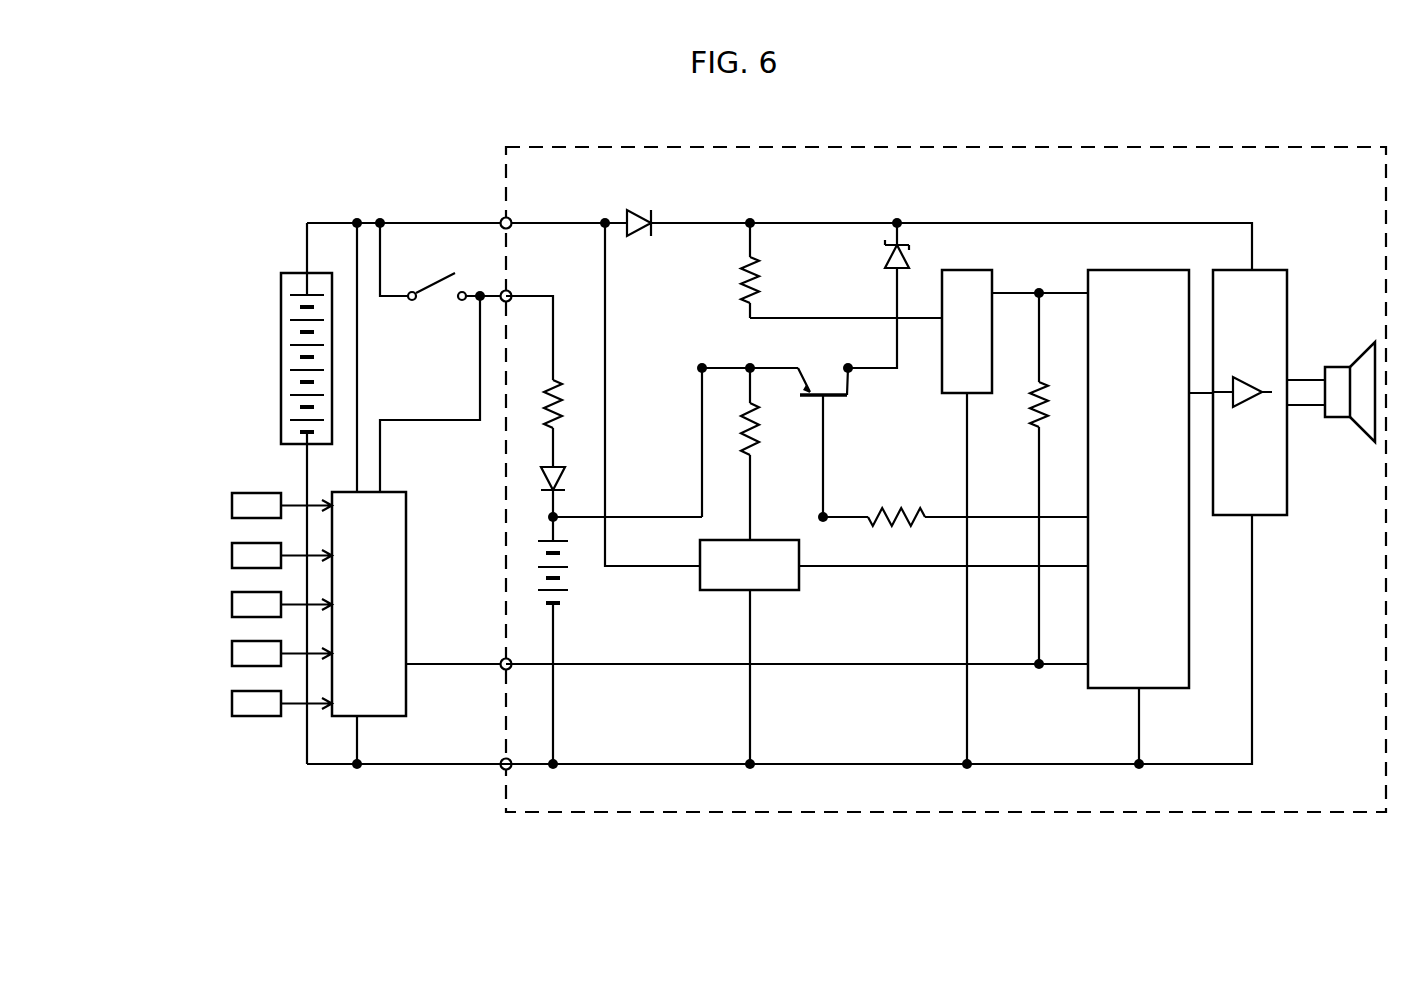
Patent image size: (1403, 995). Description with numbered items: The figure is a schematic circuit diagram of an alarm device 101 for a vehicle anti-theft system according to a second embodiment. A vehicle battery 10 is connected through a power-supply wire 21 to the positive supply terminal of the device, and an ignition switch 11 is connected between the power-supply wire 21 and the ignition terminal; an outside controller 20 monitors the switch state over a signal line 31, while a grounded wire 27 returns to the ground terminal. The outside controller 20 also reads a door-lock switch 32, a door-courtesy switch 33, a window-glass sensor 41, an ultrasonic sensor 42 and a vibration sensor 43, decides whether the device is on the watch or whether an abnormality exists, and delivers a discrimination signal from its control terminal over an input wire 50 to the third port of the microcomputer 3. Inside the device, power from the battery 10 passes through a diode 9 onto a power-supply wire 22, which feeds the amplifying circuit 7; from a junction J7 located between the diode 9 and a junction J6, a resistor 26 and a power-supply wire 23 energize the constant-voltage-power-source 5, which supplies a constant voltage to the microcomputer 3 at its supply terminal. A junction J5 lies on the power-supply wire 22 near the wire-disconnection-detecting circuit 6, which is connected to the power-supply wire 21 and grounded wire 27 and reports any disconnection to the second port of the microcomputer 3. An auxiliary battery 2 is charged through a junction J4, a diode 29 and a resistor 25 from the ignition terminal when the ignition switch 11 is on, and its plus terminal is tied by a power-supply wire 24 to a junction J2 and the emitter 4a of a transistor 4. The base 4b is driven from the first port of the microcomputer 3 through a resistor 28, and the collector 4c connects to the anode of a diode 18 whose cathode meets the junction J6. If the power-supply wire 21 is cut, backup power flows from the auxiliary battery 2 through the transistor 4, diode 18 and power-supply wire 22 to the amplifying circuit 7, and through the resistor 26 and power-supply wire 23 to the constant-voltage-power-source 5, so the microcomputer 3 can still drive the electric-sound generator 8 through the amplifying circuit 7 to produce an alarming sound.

The alarm device 101 is at (550, 147).
The vehicle battery 10 is at (292, 272).
The power-supply wire 21 is at (430, 222).
The ignition switch 11 is at (433, 284).
The signal line 31 is at (410, 420).
The outside controller 20 is at (505, 659).
The grounded wire 27 is at (395, 766).
The door-lock switch 32 is at (230, 507).
The door-courtesy switch 33 is at (230, 556).
The window-glass sensor 41 is at (230, 605).
The ultrasonic sensor 42 is at (230, 654).
The vibration sensor 43 is at (230, 704).
The resistor 25 is at (548, 393).
The diode 29 is at (550, 470).
The auxiliary battery 2 is at (565, 643).
The power-supply wire 24 is at (643, 516).
The diode 9 is at (634, 209).
The wire-disconnection-detecting circuit 6 is at (699, 555).
The power-supply wire 22 is at (800, 222).
The resistor 26 is at (745, 280).
The power-supply wire 23 is at (800, 317).
The diode 18 is at (886, 257).
The transistor 4 is at (806, 398).
The emitter 4a is at (752, 366).
The base 4b is at (820, 514).
The collector 4c is at (857, 357).
The resistor 28 is at (911, 515).
The constant-voltage-power-source 5 is at (945, 270).
The microcomputer 3 is at (1100, 270).
The input wire 50 is at (866, 665).
The amplifying circuit 7 is at (1282, 270).
The electric-sound generator 8 is at (1335, 366).
The junction J2 is at (700, 370).
The junction J4 is at (553, 517).
The junction J5 is at (602, 219).
The junction J6 is at (900, 219).
The junction J7 is at (748, 219).